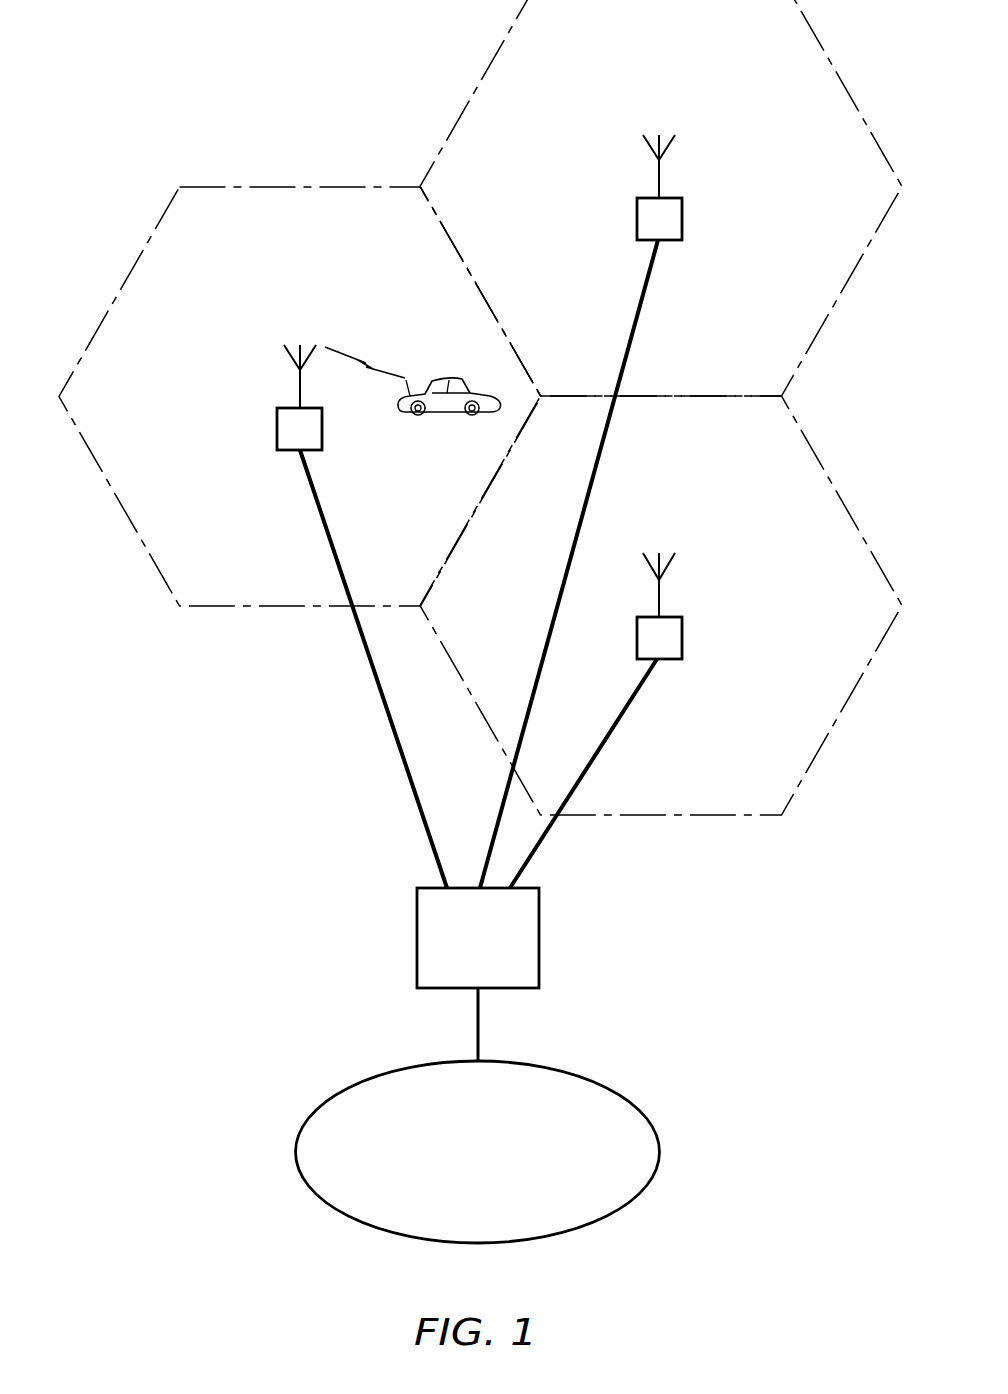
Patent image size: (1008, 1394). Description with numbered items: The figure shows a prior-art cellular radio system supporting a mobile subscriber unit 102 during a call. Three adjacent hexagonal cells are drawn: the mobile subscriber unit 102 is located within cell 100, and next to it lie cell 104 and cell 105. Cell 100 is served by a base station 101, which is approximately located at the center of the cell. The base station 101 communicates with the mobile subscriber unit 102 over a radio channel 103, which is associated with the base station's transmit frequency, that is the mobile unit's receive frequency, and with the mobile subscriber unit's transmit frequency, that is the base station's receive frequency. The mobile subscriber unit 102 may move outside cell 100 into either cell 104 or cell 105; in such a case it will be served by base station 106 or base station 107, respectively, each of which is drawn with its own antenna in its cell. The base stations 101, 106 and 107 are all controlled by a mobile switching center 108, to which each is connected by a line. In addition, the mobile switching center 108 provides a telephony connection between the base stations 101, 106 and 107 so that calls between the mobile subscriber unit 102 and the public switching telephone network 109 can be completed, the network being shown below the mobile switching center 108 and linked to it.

The cell 100 is at (120, 289).
The base station 101 is at (277, 432).
The mobile subscriber unit 102 is at (445, 410).
The radio channel 103 is at (363, 358).
The cell 104 is at (840, 79).
The cell 105 is at (840, 498).
The base station 106 is at (637, 221).
The base station 107 is at (637, 639).
The mobile switching center 108 is at (417, 937).
The public switching telephone network 109 is at (609, 1086).